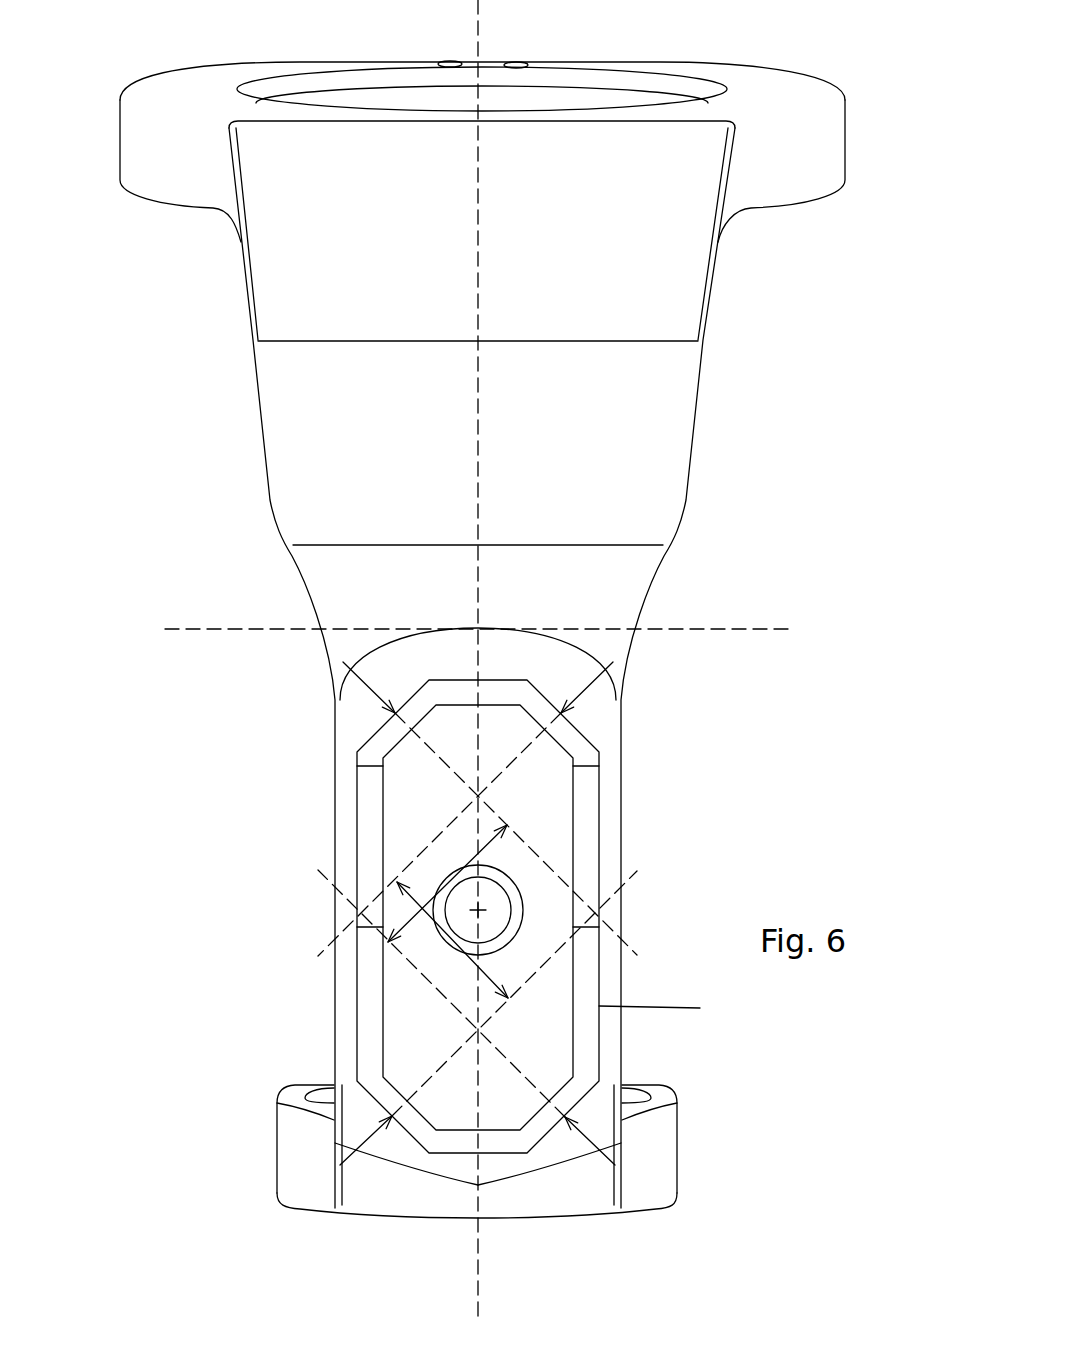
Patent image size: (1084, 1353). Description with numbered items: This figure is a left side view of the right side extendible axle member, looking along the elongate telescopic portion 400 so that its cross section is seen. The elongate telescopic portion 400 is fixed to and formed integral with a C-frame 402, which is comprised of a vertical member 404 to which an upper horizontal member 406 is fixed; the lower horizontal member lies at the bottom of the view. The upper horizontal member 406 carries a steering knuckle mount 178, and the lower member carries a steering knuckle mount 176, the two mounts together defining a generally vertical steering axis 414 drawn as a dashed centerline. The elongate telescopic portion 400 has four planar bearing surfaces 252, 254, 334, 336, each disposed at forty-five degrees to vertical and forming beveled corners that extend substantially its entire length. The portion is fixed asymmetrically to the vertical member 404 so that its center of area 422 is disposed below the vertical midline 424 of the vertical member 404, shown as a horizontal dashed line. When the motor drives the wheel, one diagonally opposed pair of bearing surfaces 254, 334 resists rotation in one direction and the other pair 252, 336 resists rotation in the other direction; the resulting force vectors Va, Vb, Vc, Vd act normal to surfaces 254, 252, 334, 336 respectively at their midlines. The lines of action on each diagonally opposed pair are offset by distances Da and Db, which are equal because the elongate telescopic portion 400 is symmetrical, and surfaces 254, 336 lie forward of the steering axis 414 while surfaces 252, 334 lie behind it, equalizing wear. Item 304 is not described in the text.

The steering knuckle mount 178 is at (327, 102).
The upper horizontal member 406 is at (755, 58).
The vertical member 404 is at (322, 417).
The C-frame 402 is at (400, 832).
The transition section 304 is at (587, 612).
The vertical midline 424 is at (737, 630).
The bearing surface 254 is at (375, 732).
The bearing surface 252 is at (582, 735).
The center of area 422 is at (478, 910).
The bearing surface 336 is at (335, 1143).
The bearing surface 334 is at (621, 1143).
The steering knuckle mount 176 is at (305, 1190).
The steering axis 414 is at (478, 1232).
The elongate telescopic portion 400 is at (700, 1008).
The force vector Va is at (335, 695).
The force vector Vb is at (620, 703).
The force vector Vc is at (605, 1150).
The force vector Vd is at (345, 1162).
The offset distance Da is at (467, 862).
The offset distance Db is at (470, 962).